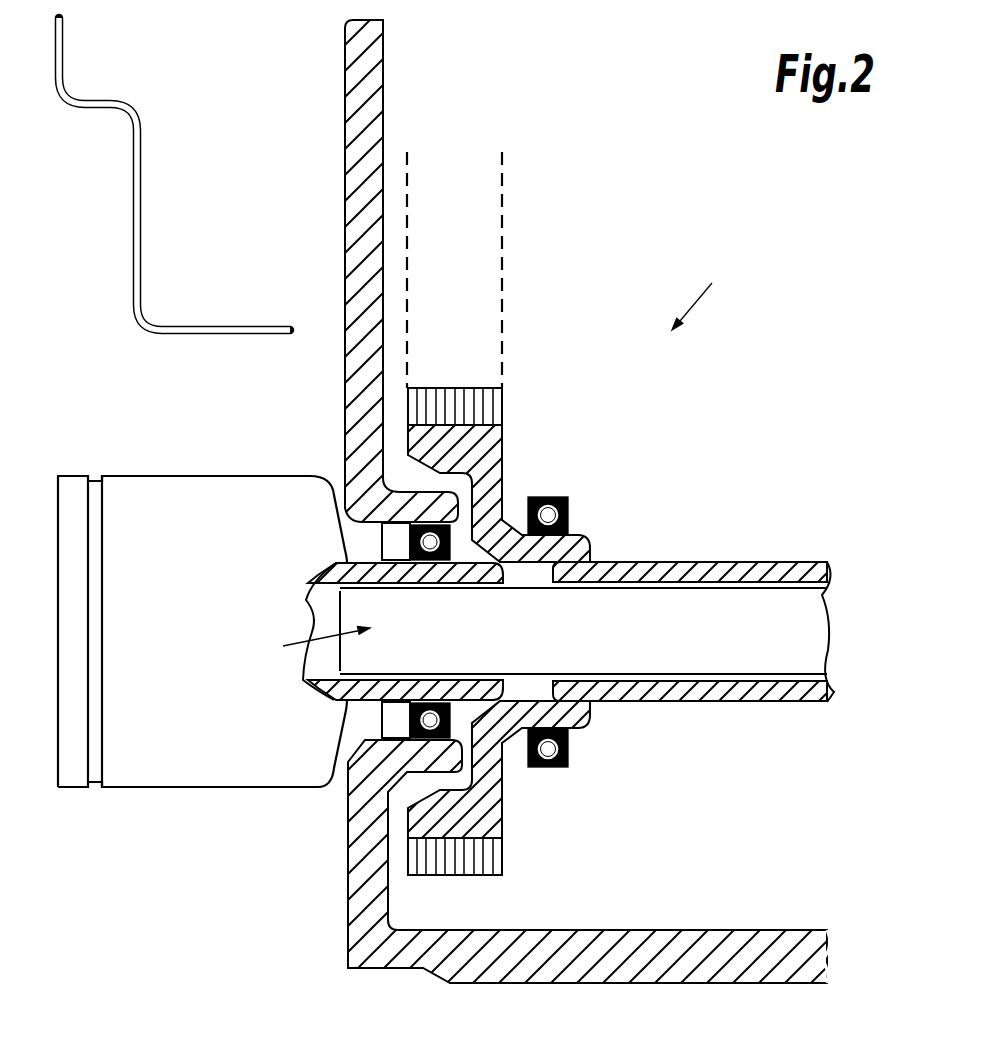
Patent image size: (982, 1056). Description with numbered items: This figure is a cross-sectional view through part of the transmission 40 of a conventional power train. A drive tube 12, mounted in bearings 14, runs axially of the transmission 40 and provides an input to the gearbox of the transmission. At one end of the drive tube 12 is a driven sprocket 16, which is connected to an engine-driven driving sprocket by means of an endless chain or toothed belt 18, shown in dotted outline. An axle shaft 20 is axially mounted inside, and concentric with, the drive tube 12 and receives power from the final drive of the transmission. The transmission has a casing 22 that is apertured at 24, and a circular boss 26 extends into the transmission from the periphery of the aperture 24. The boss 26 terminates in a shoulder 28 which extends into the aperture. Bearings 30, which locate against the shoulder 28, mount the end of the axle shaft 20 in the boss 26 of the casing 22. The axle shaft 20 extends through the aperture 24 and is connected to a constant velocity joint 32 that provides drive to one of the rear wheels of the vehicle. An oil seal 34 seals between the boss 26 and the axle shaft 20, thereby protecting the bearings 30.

The drive tube 12 is at (735, 568).
The bearings 14 is at (549, 497).
The driven sprocket 16 is at (488, 409).
The endless chain or toothed belt 18 is at (507, 265).
The axle shaft 20 is at (797, 673).
The casing 22 is at (547, 965).
The aperture 24 is at (313, 646).
The circular boss 26 is at (415, 503).
The shoulder 28 is at (473, 722).
The bearings 30 is at (405, 718).
The constant velocity joint 32 is at (150, 755).
The oil seal 34 is at (408, 542).
The transmission 40 is at (702, 291).